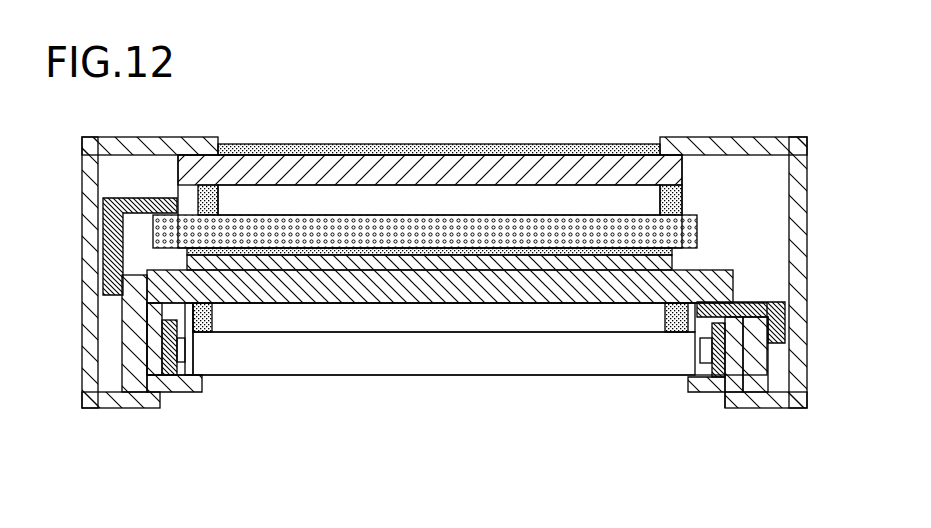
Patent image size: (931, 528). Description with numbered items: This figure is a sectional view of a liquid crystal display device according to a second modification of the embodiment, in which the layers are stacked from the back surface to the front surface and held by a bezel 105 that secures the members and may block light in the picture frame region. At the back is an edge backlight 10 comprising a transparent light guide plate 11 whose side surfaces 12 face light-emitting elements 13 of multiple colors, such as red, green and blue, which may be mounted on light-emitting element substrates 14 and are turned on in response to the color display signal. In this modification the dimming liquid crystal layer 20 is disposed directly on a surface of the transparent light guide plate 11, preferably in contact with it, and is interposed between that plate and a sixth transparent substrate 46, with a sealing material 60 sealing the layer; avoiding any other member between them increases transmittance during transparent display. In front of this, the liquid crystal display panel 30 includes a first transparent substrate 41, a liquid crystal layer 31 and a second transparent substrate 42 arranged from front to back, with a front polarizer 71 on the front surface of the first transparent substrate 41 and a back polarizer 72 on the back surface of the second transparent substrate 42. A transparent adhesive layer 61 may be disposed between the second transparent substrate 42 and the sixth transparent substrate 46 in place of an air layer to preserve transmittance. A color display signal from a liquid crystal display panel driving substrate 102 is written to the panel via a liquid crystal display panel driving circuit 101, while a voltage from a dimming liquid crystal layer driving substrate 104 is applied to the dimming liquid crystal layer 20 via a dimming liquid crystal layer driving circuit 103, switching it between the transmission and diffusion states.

The edge backlight 10 is at (615, 463).
The transparent light guide plate 11 is at (600, 360).
The side surfaces 12 is at (705, 355).
The light-emitting elements 13 is at (186, 374).
The light-emitting element substrates 14 is at (170, 378).
The dimming liquid crystal layer 20 is at (440, 310).
The liquid crystal display panel 30 is at (478, 85).
The liquid crystal layer 31 is at (350, 202).
The first transparent substrate 41 is at (297, 165).
The second transparent substrate 42 is at (410, 233).
The sixth transparent substrate 46 is at (470, 277).
The sealing material 60 is at (197, 202).
The transparent adhesive layer 61 is at (180, 265).
The front polarizer 71 is at (595, 148).
The back polarizer 72 is at (700, 248).
The liquid crystal display panel driving circuit 101 is at (103, 248).
The liquid crystal display panel driving substrate 102 is at (147, 332).
The dimming liquid crystal layer driving circuit 103 is at (773, 303).
The dimming liquid crystal layer driving substrate 104 is at (757, 360).
The bezel 105 is at (130, 375).